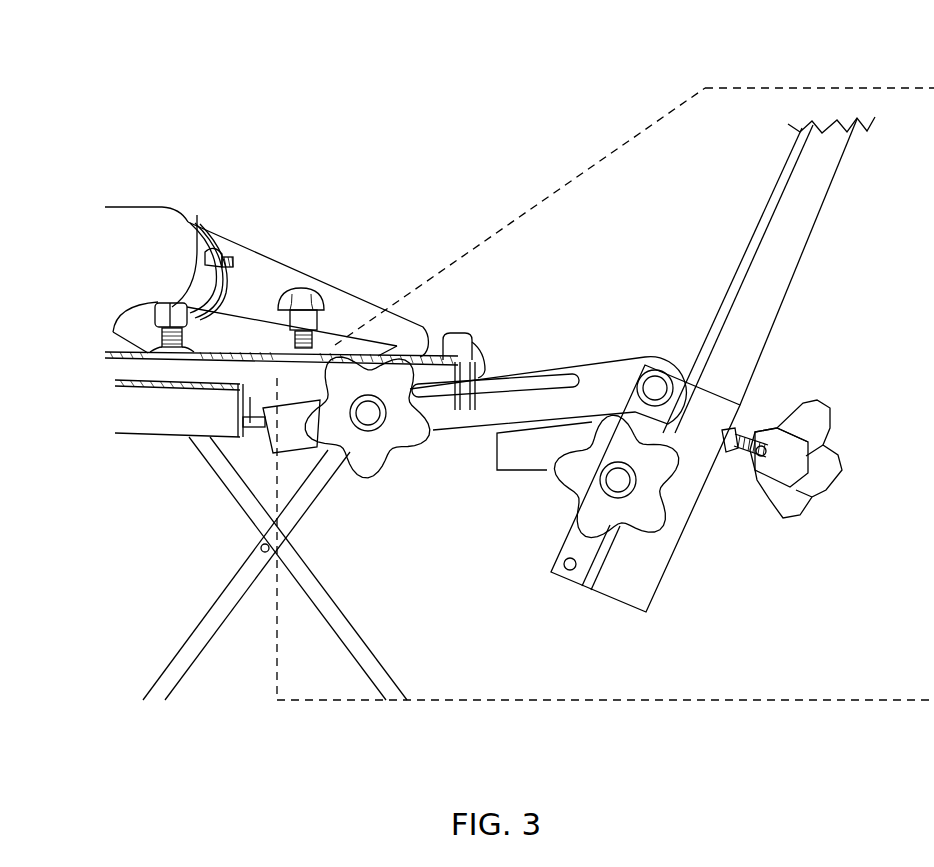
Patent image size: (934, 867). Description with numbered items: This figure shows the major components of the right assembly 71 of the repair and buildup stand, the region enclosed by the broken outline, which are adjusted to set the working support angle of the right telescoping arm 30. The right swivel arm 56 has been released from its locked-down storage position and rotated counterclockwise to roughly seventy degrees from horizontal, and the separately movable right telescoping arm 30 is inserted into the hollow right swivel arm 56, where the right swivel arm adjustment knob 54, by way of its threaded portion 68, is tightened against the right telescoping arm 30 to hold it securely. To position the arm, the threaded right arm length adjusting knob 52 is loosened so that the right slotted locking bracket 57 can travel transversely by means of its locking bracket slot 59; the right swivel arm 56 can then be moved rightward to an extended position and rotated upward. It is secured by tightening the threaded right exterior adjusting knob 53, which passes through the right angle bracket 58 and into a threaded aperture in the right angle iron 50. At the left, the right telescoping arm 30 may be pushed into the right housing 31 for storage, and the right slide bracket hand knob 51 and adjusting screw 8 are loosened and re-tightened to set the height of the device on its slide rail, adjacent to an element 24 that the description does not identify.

The right assembly 71 is at (776, 86).
The adjusting screw 8 is at (197, 215).
The right slide bracket hand knob 51 is at (305, 288).
The locking bracket slot 59 is at (517, 393).
The right slotted locking bracket 57 is at (545, 367).
The threaded portion 68 is at (747, 437).
The right telescoping arm 30 is at (843, 163).
The table 24 is at (142, 413).
The right housing 31 is at (250, 400).
The right arm length adjusting knob 52 is at (412, 453).
The right angle iron 50 is at (532, 470).
The right exterior adjusting knob 53 is at (660, 513).
The right swivel arm adjustment knob 54 is at (837, 457).
The right swivel arm 56 is at (637, 597).
The right angle bracket 58 is at (577, 577).